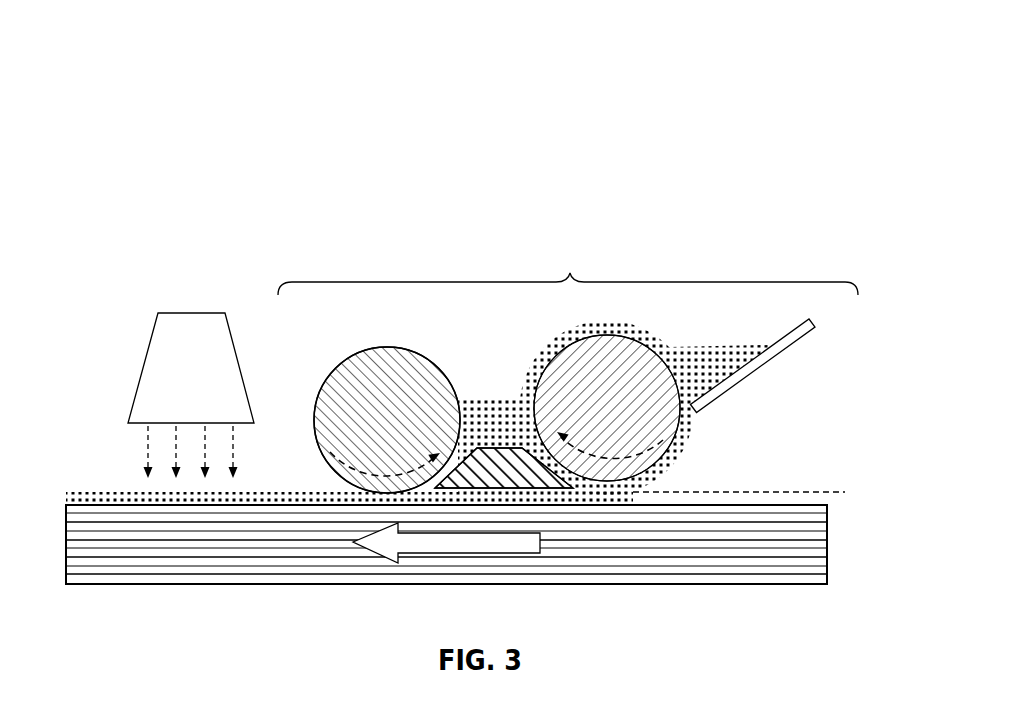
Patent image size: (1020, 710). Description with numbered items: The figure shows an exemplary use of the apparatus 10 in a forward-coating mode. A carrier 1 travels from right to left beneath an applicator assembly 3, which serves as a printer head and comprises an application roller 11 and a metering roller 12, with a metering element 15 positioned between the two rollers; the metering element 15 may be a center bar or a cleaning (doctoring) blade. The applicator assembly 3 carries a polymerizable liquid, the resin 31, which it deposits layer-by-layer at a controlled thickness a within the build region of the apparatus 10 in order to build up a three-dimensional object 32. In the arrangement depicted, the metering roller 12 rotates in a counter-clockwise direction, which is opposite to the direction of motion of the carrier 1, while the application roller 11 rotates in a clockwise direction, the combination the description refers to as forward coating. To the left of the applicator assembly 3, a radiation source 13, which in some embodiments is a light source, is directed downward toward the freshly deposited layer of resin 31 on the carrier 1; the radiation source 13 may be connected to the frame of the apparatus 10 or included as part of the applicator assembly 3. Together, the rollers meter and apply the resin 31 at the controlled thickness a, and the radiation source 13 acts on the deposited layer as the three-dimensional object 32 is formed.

The apparatus 10 is at (108, 140).
The carrier 1 is at (802, 571).
The applicator assembly 3 is at (568, 269).
The application roller 11 is at (636, 341).
The metering roller 12 is at (360, 363).
The radiation source 13 is at (163, 342).
The metering element 15 is at (522, 453).
The resin 31 is at (720, 365).
The three-dimensional object 32 is at (115, 483).
The controlled thickness a is at (749, 492).